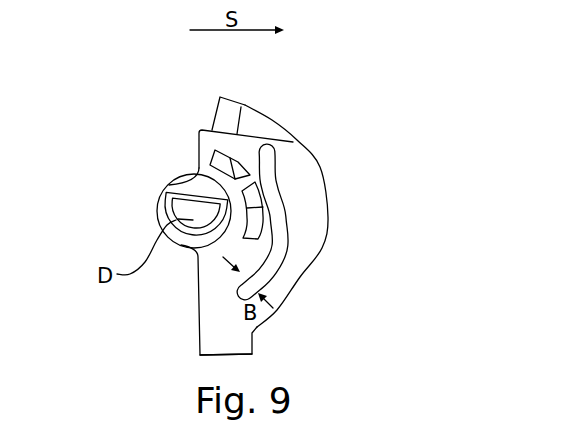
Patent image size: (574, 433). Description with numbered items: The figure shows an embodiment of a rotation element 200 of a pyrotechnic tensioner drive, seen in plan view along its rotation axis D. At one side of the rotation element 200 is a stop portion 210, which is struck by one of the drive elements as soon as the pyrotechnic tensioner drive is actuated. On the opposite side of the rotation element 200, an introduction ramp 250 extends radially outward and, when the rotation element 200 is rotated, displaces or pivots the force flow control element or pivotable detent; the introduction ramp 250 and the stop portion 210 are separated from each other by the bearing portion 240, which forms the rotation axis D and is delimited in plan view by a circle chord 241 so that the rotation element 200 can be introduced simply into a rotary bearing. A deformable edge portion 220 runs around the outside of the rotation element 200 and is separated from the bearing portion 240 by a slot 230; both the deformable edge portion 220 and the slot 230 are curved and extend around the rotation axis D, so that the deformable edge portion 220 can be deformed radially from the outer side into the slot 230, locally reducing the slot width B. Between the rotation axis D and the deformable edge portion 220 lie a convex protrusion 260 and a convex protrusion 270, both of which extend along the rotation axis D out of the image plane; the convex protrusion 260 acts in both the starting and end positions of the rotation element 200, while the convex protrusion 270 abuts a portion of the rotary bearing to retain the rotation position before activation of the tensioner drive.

The rotation element 200 is at (198, 281).
The stop portion 210 is at (198, 335).
The deformable edge portion 220 is at (307, 187).
The slot 230 is at (280, 250).
The bearing portion 240 is at (166, 207).
The circle chord 241 is at (205, 203).
The introduction ramp 250 is at (222, 112).
The convex protrusion 260 is at (256, 217).
The convex protrusion 270 is at (247, 170).